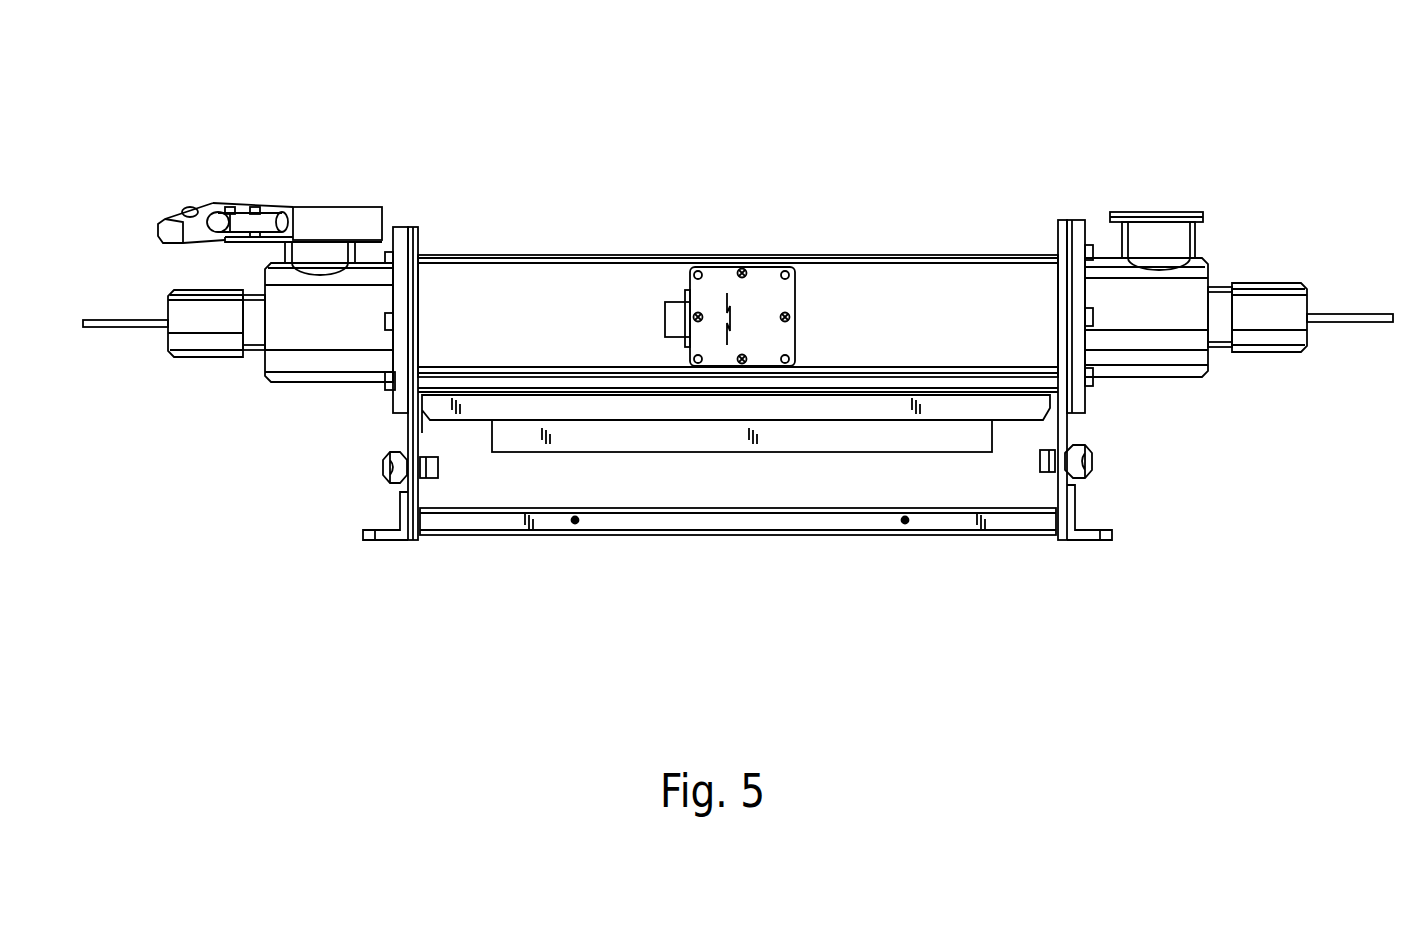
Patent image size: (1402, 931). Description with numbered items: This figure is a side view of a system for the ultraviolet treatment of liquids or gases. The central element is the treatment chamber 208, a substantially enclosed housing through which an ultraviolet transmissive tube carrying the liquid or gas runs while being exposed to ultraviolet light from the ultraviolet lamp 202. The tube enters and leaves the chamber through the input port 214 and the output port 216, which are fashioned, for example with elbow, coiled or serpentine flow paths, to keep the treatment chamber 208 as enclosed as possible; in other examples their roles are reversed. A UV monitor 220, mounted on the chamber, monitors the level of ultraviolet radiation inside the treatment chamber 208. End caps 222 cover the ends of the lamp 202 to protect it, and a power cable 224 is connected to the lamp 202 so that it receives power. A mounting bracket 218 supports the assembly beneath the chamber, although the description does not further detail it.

The ultraviolet lamp 202 is at (1243, 240).
The treatment chamber 208 is at (745, 198).
The input port 214 is at (323, 162).
The output port 216 is at (1158, 152).
The mounting bracket 218 is at (795, 452).
The UV monitor 220 is at (724, 343).
The end caps 222 is at (198, 355).
The power cable 224 is at (113, 327).